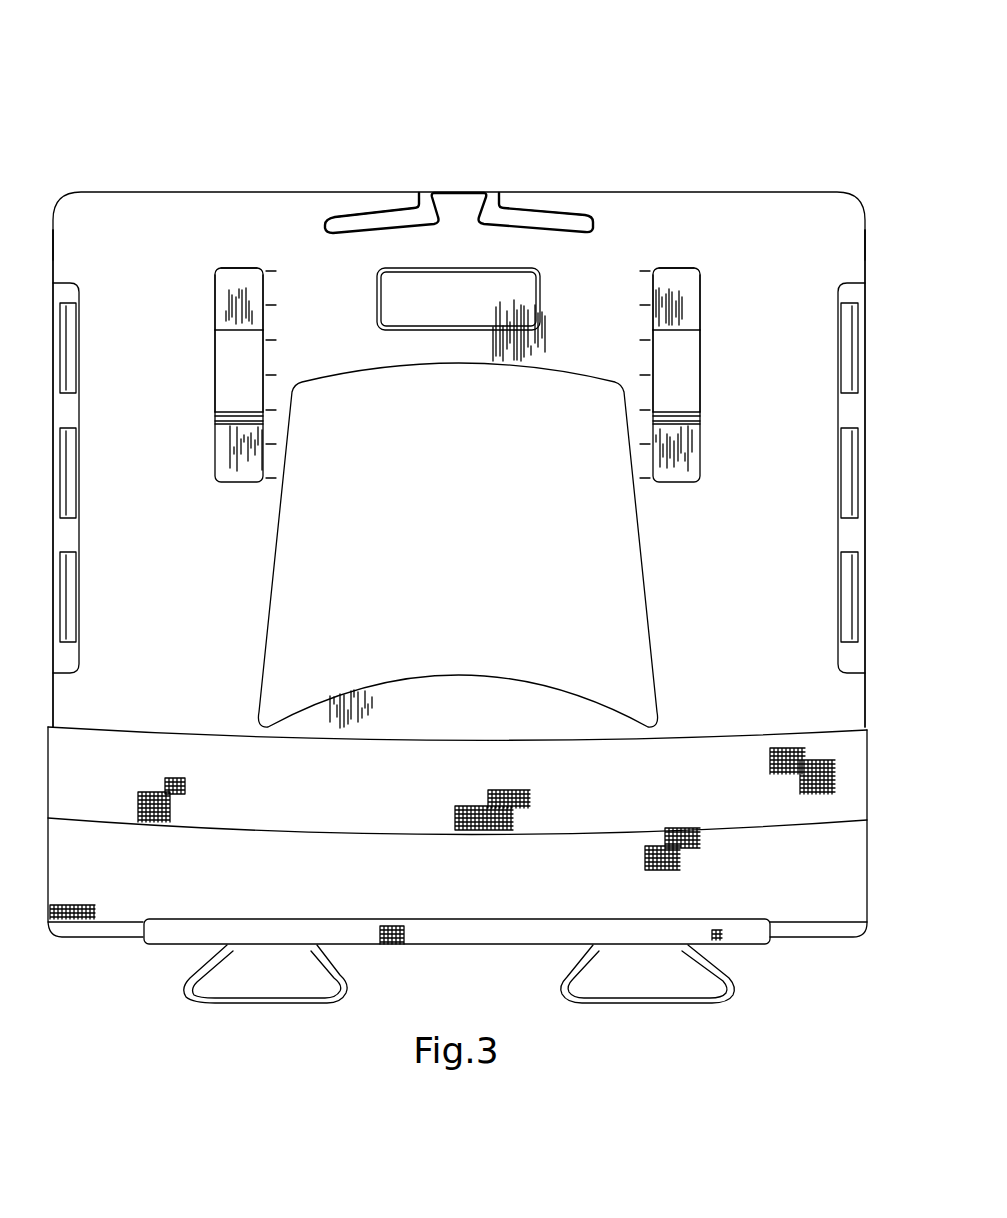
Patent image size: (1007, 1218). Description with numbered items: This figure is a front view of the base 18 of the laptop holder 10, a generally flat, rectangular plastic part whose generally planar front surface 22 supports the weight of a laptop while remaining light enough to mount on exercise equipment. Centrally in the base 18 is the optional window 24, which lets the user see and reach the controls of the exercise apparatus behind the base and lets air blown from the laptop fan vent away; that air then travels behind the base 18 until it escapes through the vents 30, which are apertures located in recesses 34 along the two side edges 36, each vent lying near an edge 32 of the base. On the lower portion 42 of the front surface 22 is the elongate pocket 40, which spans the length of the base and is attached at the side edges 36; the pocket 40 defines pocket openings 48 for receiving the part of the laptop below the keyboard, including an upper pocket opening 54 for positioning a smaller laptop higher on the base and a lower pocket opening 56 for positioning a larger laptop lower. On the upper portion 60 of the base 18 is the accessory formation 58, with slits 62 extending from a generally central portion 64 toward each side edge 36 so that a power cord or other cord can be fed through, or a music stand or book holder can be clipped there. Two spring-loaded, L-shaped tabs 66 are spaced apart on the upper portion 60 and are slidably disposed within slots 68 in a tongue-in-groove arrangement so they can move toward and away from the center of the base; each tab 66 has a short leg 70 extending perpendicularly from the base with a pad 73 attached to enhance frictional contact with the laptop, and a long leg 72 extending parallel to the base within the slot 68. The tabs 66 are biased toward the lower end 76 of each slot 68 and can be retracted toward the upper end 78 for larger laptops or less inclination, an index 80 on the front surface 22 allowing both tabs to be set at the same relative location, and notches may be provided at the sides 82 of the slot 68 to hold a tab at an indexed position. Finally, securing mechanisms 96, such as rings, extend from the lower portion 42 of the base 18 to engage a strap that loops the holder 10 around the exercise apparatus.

The laptop holder 10 is at (175, 124).
The base 18 is at (148, 218).
The front surface 22 is at (853, 267).
The window 24 is at (587, 400).
The vents 30 is at (72, 340).
The edge 32 is at (642, 205).
The recesses 34 is at (65, 653).
The side edges 36 is at (52, 243).
The pocket 40 is at (753, 724).
The lower portion 42 is at (137, 880).
The pocket openings 48 is at (683, 930).
The upper pocket opening 54 is at (521, 740).
The lower pocket opening 56 is at (437, 833).
The accessory formation 58 is at (397, 208).
The upper portion 60 is at (505, 248).
The slits 62 is at (356, 290).
The central portion 64 is at (457, 200).
The tabs 66 is at (232, 390).
The slots 68 is at (218, 300).
The short leg 70 is at (700, 413).
The long leg 72 is at (262, 408).
The pads 73 is at (215, 395).
The lower end 76 is at (232, 484).
The upper end 78 is at (238, 268).
The index 80 is at (263, 293).
The sides 82 is at (213, 443).
The securing mechanism 96 is at (340, 996).